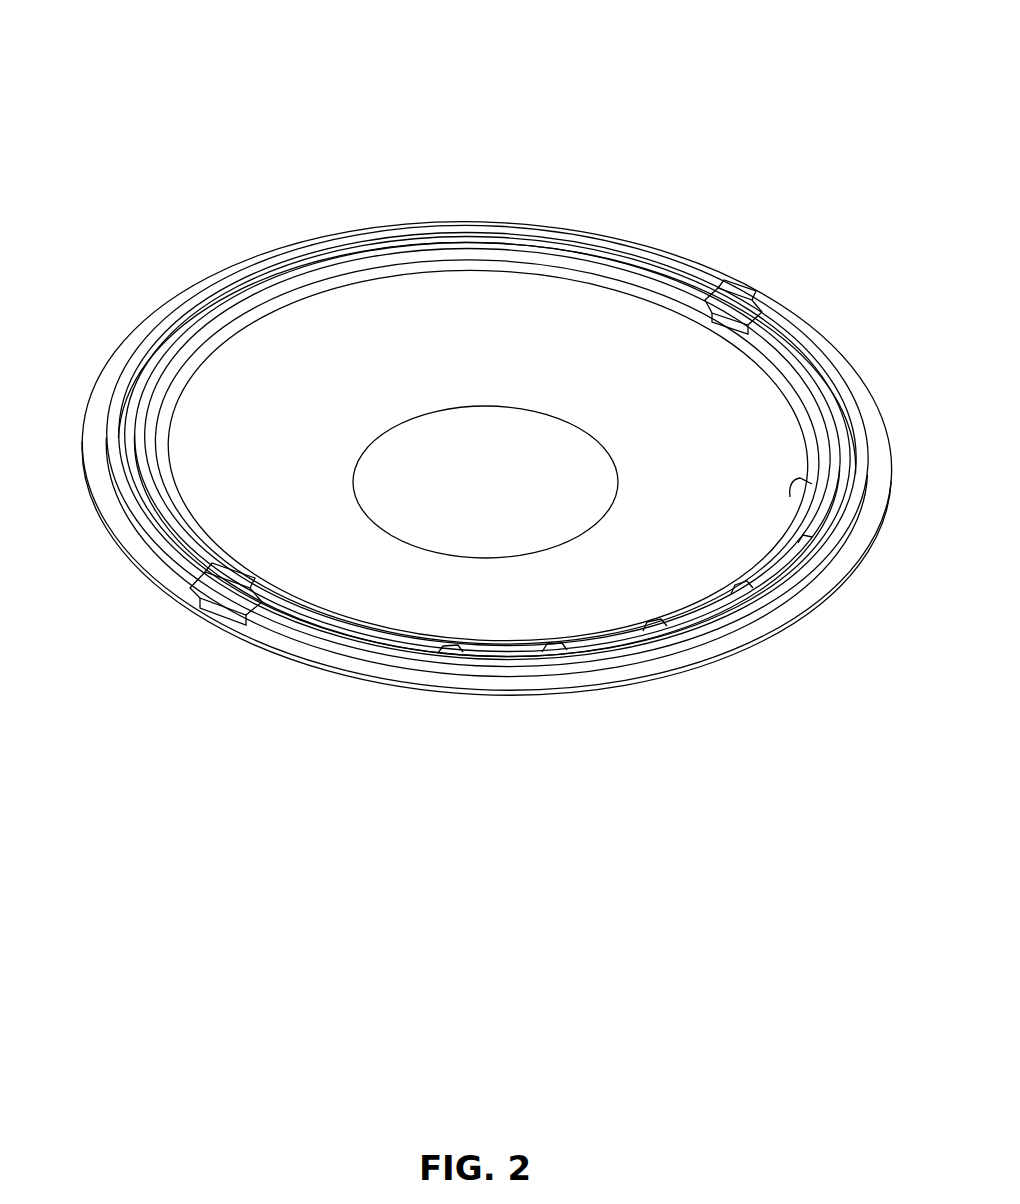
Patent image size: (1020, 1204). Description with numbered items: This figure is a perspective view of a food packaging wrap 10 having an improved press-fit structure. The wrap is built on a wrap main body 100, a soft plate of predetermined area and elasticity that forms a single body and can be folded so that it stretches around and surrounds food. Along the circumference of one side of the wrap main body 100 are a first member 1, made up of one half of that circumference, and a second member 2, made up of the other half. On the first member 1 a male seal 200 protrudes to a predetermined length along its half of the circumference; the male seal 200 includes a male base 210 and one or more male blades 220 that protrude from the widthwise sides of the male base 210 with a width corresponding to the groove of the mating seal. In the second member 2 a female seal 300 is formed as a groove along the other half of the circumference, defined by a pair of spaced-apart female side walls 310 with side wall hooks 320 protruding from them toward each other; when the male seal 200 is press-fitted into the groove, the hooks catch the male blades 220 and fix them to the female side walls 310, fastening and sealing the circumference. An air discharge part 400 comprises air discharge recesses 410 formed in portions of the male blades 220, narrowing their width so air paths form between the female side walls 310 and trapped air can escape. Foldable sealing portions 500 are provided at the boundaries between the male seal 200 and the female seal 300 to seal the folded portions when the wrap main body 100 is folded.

The food packaging wrap 10 is at (143, 55).
The first member 1 is at (638, 665).
The second member 2 is at (100, 410).
The wrap main body 100 is at (565, 300).
The male seal 200 is at (523, 417).
The male base 210 is at (790, 325).
The male blades 220 is at (840, 397).
The female seal 300 is at (433, 483).
The female side walls 310 is at (150, 515).
The side wall hooks 320 is at (217, 620).
The air discharge part 400 is at (686, 600).
The air discharge recesses 410 is at (935, 652).
The foldable sealing portions 500 is at (748, 286).